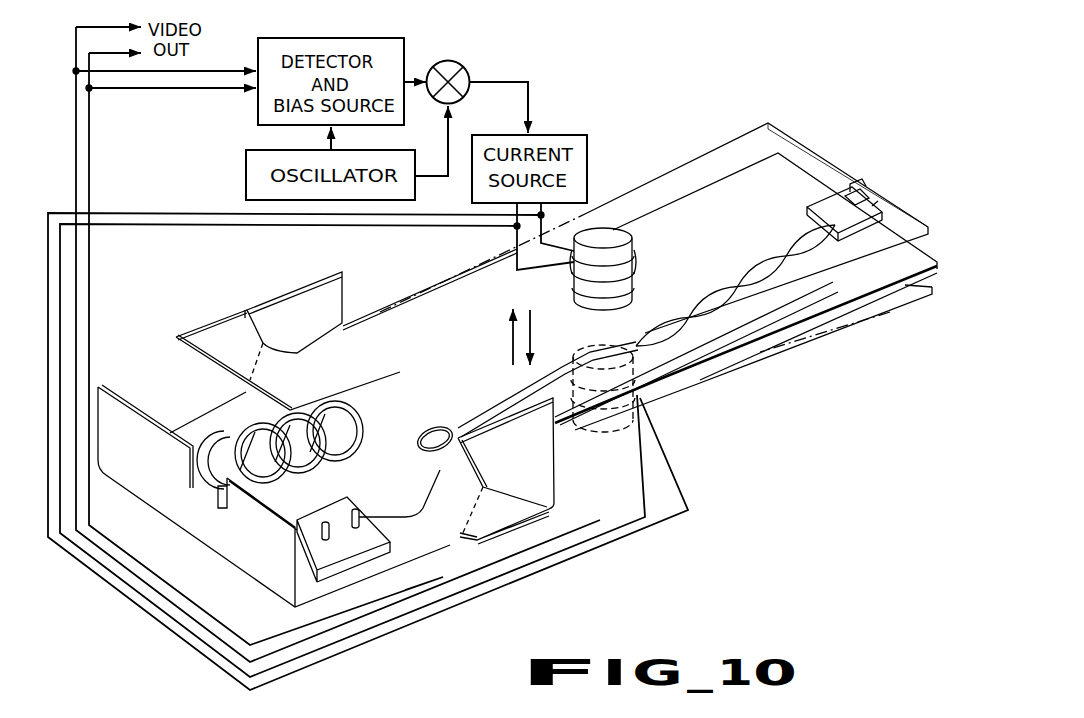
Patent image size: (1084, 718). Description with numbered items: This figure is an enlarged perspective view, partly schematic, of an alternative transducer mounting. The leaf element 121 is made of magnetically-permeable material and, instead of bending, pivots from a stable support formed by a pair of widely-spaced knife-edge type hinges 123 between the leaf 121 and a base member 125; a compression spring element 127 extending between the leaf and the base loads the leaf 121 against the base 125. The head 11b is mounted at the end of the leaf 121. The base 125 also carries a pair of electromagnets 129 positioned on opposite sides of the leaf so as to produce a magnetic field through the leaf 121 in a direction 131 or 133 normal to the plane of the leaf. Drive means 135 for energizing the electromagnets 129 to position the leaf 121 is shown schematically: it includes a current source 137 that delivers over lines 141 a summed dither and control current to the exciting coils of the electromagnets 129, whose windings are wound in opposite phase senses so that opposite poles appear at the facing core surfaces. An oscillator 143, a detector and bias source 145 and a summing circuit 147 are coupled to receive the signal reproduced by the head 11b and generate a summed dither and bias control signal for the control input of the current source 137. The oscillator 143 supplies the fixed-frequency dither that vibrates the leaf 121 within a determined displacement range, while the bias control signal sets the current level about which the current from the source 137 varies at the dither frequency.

The head 11b is at (832, 198).
The leaf element 121 is at (845, 297).
The knife-edge type hinges 123 is at (279, 329).
The base member 125 is at (252, 567).
The compression spring element 127 is at (355, 413).
The electromagnets 129 is at (618, 232).
The direction 131 is at (513, 333).
The direction 133 is at (530, 333).
The drive means 135 is at (543, 94).
The current source 137 is at (588, 156).
The lines 141 is at (476, 218).
The oscillator 143 is at (246, 178).
The detector and bias source 145 is at (258, 112).
The summing circuit 147 is at (468, 72).